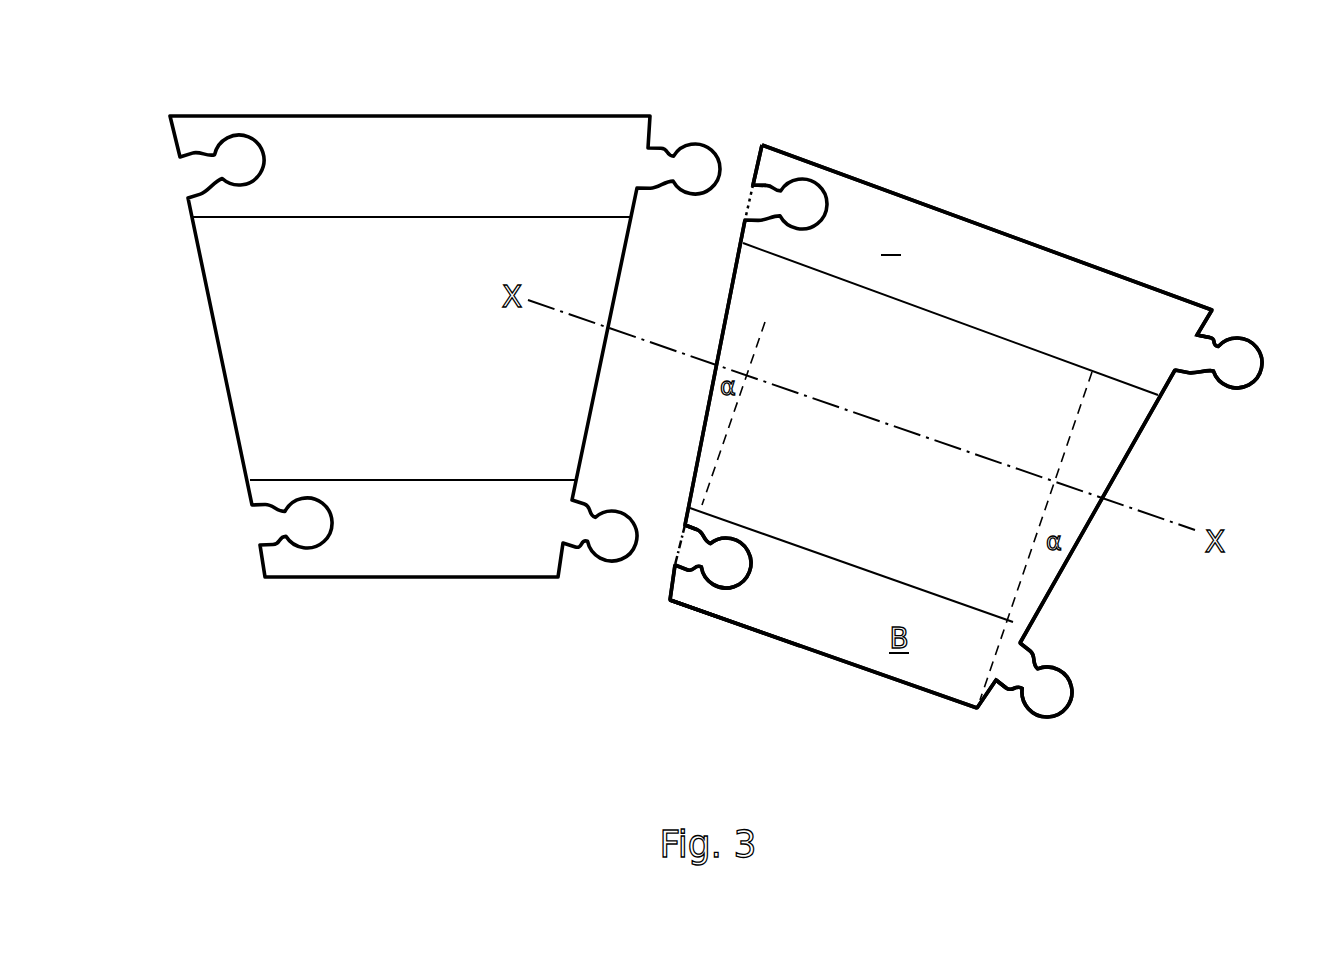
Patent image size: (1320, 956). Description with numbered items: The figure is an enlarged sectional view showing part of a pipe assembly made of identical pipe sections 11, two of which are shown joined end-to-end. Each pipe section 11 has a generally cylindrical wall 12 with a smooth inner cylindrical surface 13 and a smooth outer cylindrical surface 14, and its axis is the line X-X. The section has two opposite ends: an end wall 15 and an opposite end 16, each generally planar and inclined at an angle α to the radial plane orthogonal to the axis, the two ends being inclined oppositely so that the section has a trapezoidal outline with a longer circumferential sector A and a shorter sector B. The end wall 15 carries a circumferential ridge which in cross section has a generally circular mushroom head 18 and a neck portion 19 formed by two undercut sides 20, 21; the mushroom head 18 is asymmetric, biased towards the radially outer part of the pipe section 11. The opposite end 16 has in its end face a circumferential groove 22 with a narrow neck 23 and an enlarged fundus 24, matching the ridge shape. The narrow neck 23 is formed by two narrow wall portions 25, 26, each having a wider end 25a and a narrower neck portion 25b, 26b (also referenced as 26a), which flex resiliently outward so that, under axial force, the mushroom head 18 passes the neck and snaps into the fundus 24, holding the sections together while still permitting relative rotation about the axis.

The pipe section 11 is at (964, 208).
The cylindrical wall 12 is at (1026, 264).
The inner cylindrical surface 13 is at (845, 172).
The outer cylindrical surface 14 is at (860, 288).
The end wall 15 is at (1138, 440).
The opposite end 16 is at (710, 383).
The mushroom head 18 is at (1052, 697).
The neck portion 19 is at (1013, 668).
The undercut side 20 is at (1222, 357).
The undercut side 21 is at (753, 184).
The circumferential groove 22 is at (745, 192).
The narrow neck 23 is at (680, 540).
The enlarged fundus 24 is at (738, 566).
The narrow wall portion 25 is at (718, 508).
The wider end 25a is at (693, 520).
The narrower neck portion 25b is at (741, 532).
The narrow wall portion 26 is at (697, 625).
The narrower neck portion 26a is at (683, 595).
The narrower neck portion 26b is at (722, 612).